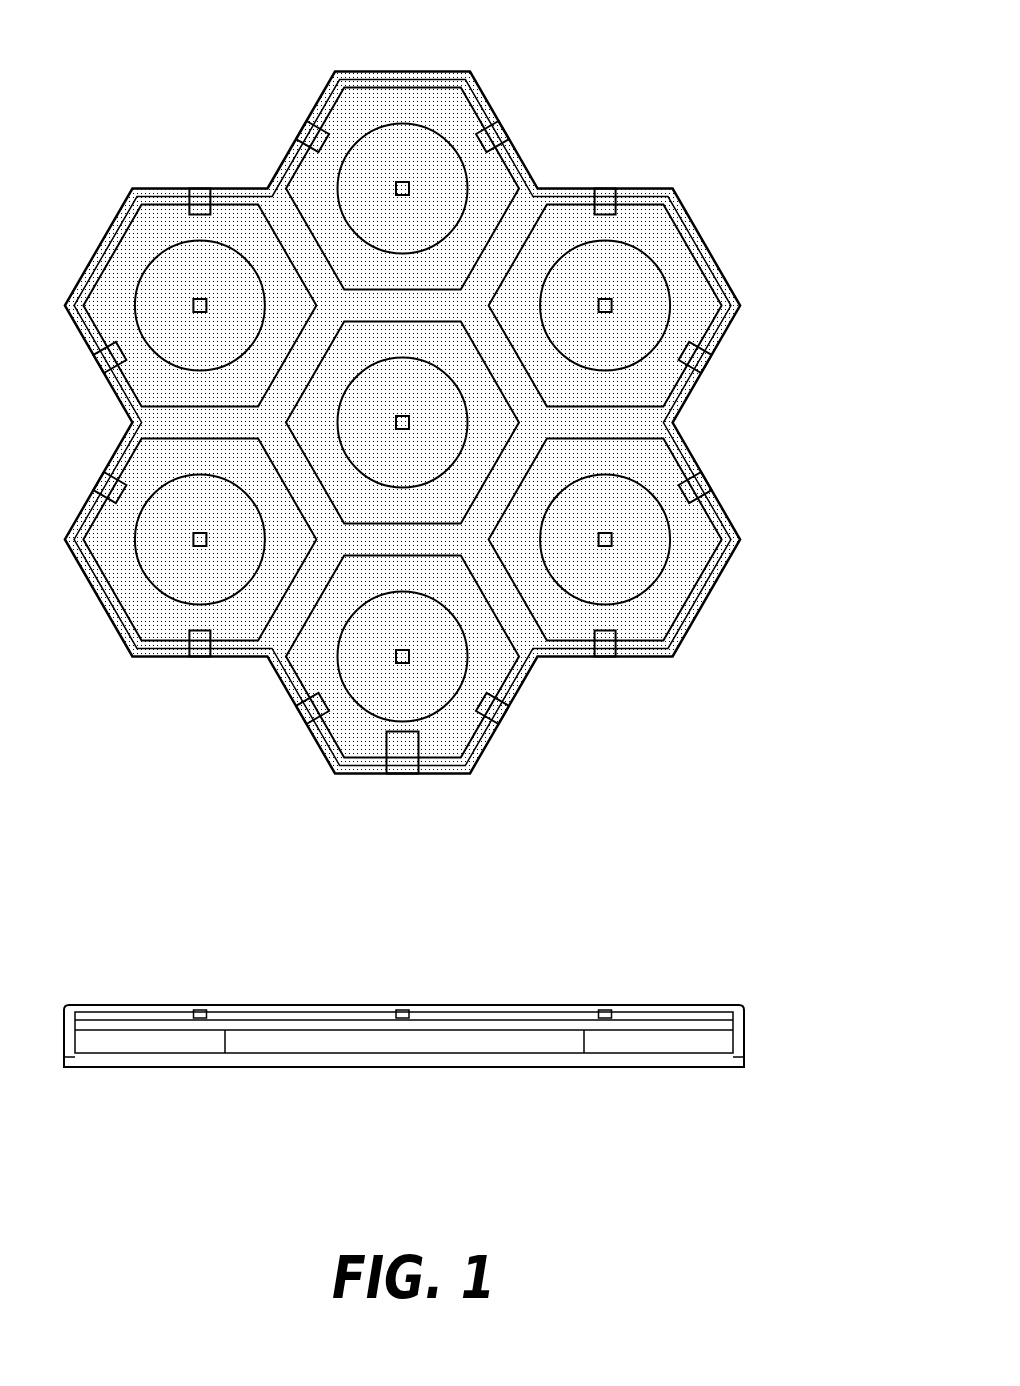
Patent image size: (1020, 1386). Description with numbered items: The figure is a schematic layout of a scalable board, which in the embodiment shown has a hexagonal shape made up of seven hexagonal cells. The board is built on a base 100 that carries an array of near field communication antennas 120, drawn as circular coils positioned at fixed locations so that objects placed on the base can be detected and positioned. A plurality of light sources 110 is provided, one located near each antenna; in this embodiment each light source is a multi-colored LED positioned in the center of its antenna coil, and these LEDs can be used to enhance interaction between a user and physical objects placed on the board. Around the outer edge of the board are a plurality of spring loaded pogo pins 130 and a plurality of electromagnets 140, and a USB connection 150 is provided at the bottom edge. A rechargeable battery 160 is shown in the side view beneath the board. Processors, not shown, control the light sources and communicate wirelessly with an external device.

The base 100 is at (405, 392).
The light sources 110 is at (619, 539).
The near field communication (NFC) antennas 120 is at (665, 279).
The pogo pins 130 is at (203, 664).
The electromagnets 140 is at (518, 712).
The USB connection 150 is at (403, 781).
The rechargeable battery 160 is at (433, 1032).